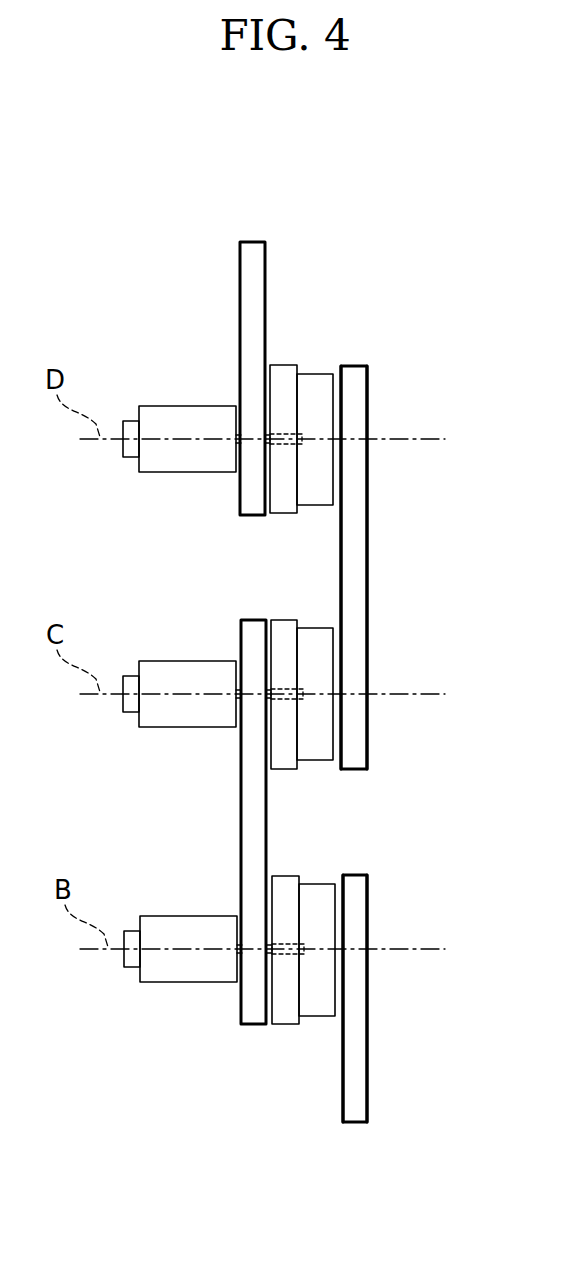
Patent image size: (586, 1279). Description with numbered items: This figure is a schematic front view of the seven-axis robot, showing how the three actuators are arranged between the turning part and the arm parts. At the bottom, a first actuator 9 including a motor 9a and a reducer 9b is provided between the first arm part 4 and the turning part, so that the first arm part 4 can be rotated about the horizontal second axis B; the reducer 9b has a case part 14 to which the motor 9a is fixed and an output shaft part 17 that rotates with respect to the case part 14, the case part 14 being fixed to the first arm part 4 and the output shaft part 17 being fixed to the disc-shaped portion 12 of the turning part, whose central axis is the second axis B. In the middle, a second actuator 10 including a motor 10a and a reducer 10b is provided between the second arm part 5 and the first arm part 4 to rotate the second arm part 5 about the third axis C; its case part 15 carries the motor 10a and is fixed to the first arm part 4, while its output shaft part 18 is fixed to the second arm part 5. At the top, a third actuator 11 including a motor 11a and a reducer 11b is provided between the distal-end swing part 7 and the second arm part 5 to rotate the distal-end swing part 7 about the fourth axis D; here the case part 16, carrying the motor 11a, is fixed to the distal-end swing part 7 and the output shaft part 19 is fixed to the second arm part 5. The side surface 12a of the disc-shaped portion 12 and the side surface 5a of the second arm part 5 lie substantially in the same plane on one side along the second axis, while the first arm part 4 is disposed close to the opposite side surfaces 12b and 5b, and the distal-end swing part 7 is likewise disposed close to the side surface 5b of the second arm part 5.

The first arm part 4 is at (229, 1015).
The second arm part 5 is at (381, 540).
The side surface 5a is at (367, 588).
The side surface 5b is at (340, 570).
The distal-end swing part 7 is at (240, 288).
The first actuator 9 is at (168, 933).
The motor 9a is at (167, 983).
The reducer 9b is at (286, 1026).
The second actuator 10 is at (172, 687).
The motor 10a is at (174, 729).
The reducer 10b is at (392, 707).
The third actuator 11 is at (171, 434).
The motor 11a is at (183, 474).
The reducer 11b is at (331, 354).
The disc-shaped portion 12 is at (381, 1060).
The side surface 12a is at (367, 1090).
The side surface 12b is at (343, 1034).
The case part 14 is at (285, 1024).
The case part 15 is at (300, 747).
The case part 16 is at (283, 365).
The output shaft part 17 is at (315, 1016).
The output shaft part 18 is at (333, 727).
The output shaft part 19 is at (317, 374).